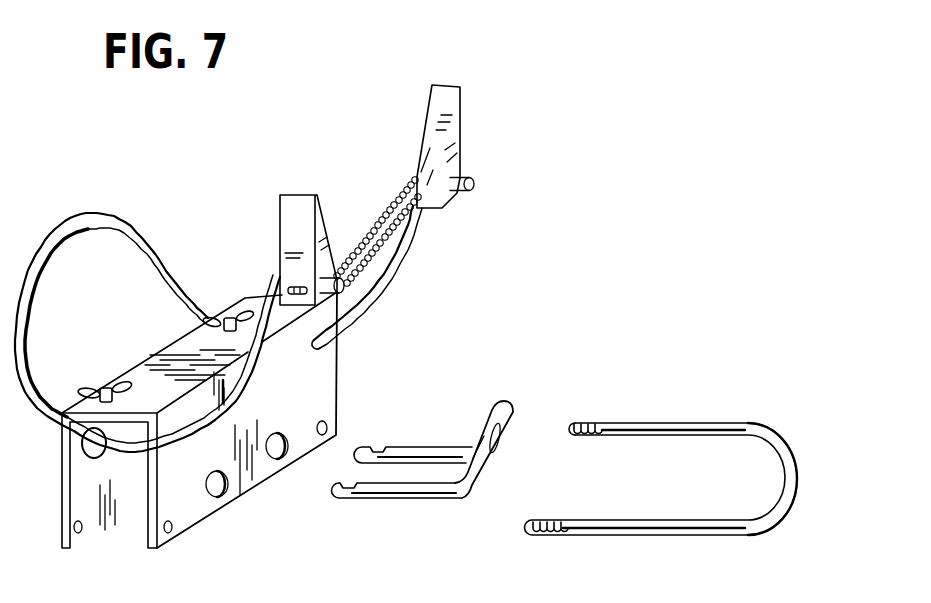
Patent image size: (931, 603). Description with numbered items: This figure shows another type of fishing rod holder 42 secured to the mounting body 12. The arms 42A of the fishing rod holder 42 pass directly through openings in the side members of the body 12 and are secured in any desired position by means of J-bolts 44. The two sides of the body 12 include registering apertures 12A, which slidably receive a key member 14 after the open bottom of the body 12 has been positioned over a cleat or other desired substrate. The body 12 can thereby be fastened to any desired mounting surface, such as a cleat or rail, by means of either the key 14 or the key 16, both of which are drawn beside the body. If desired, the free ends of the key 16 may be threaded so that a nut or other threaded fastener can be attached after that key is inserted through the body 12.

The mounting body 12 is at (334, 369).
The registering apertures 12A is at (275, 468).
The key member 14 is at (494, 404).
The key 16 is at (663, 425).
The fishing rod holder 42 is at (226, 212).
The arms 42A is at (153, 280).
The J-bolts 44 is at (135, 385).